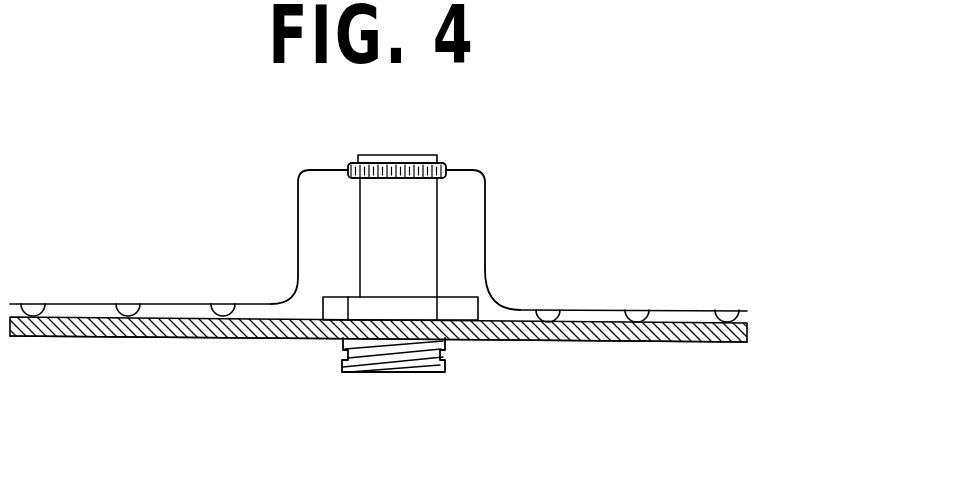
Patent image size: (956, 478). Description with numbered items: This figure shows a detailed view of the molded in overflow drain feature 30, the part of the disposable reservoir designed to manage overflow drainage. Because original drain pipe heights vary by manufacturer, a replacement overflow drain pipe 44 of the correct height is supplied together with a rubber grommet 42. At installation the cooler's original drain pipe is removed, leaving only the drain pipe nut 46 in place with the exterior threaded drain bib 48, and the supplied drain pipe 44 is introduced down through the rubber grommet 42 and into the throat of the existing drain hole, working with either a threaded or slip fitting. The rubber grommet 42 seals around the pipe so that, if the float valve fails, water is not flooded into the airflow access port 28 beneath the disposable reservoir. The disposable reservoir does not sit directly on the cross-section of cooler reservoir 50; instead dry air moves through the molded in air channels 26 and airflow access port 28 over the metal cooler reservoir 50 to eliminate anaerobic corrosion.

The molded in air channels 26 is at (110, 333).
The airflow access port 28 is at (185, 308).
The molded in overflow drain feature 30 is at (457, 230).
The rubber grommet 42 is at (447, 162).
The overflow drain pipe 44 is at (400, 243).
The drain pipe nut 46 is at (413, 310).
The exterior threaded drain bib 48 is at (417, 353).
The cross-section of cooler reservoir 50 is at (282, 333).